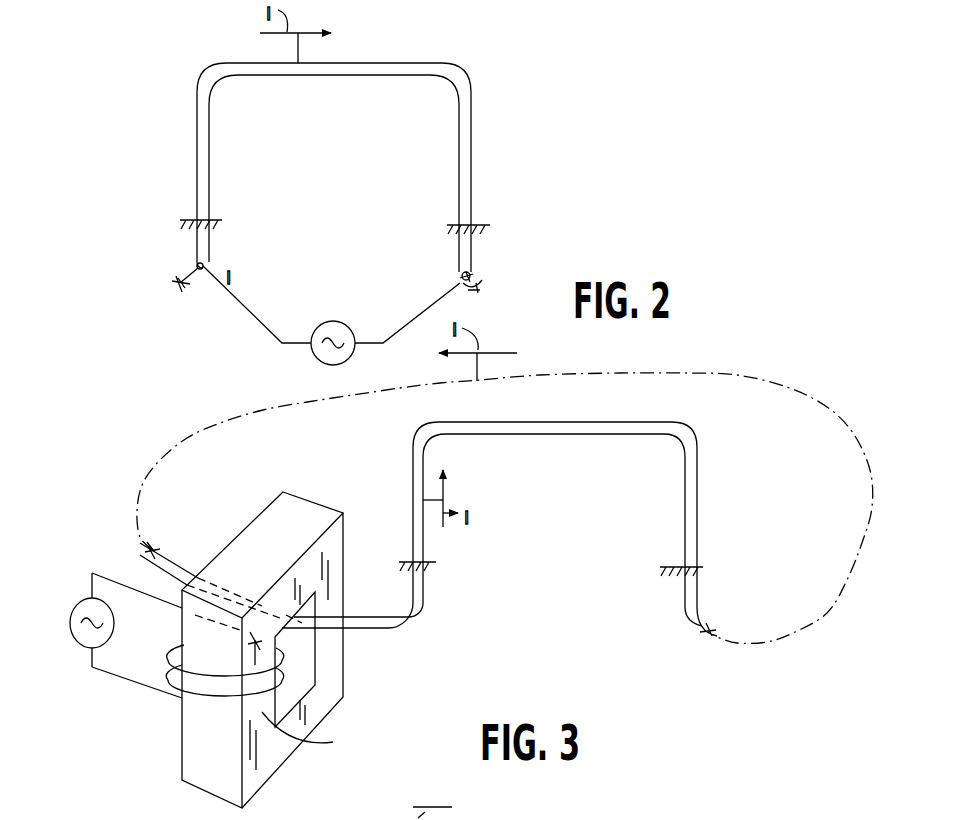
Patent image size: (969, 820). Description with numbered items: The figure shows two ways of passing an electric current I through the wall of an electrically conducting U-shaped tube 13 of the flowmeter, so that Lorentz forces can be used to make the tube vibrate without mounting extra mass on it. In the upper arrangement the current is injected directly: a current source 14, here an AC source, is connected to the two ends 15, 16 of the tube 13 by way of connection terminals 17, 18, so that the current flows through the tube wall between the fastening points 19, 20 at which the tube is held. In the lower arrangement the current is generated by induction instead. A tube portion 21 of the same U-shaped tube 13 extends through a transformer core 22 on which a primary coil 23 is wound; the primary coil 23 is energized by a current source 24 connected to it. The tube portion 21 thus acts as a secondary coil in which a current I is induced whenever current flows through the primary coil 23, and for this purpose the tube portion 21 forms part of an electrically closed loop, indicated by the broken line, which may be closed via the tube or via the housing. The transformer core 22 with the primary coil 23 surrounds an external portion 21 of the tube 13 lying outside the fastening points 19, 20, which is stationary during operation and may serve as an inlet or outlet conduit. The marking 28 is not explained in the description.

In FIG. 2, the U-shaped tube 13 is at (365, 64).
In FIG. 3, the U-shaped tube 13 is at (538, 425).
In FIG. 2, the current source 14 is at (350, 358).
In FIG. 2, the first tube end 15 is at (195, 242).
In FIG. 2, the second tube end 16 is at (465, 253).
In FIG. 2, the first connection terminal 17 is at (183, 275).
In FIG. 2, the second connection terminal 18 is at (486, 270).
In FIG. 2, the first fastening point 19 is at (188, 219).
In FIG. 3, the first fastening point 19 is at (411, 560).
In FIG. 2, the second fastening point 20 is at (478, 223).
In FIG. 3, the second fastening point 20 is at (700, 565).
In FIG. 3, the tube portion 21 is at (179, 570).
In FIG. 3, the transformer core 22 is at (208, 746).
In FIG. 3, the primary coil 23 is at (264, 702).
In FIG. 3, the current source 24 is at (73, 602).
In FIG. 3, the partial label 28 is at (432, 799).